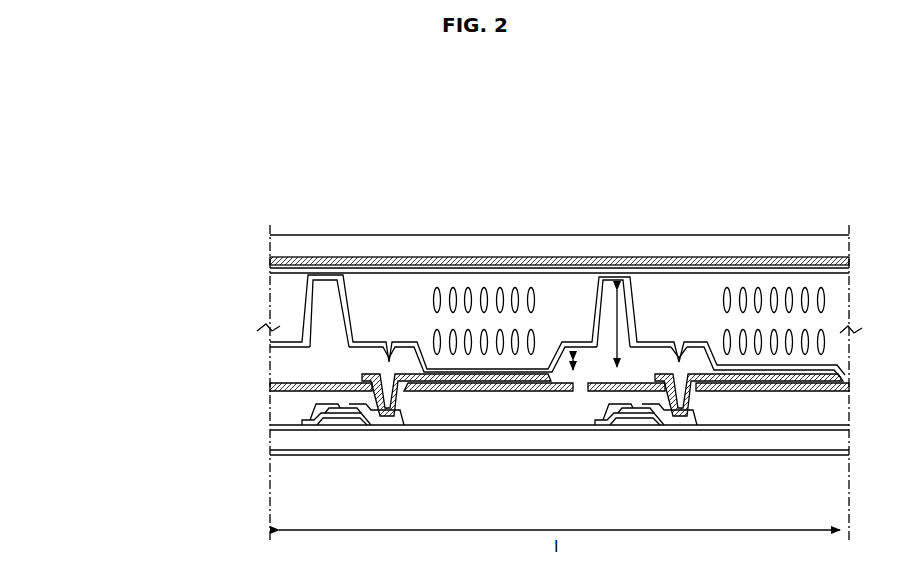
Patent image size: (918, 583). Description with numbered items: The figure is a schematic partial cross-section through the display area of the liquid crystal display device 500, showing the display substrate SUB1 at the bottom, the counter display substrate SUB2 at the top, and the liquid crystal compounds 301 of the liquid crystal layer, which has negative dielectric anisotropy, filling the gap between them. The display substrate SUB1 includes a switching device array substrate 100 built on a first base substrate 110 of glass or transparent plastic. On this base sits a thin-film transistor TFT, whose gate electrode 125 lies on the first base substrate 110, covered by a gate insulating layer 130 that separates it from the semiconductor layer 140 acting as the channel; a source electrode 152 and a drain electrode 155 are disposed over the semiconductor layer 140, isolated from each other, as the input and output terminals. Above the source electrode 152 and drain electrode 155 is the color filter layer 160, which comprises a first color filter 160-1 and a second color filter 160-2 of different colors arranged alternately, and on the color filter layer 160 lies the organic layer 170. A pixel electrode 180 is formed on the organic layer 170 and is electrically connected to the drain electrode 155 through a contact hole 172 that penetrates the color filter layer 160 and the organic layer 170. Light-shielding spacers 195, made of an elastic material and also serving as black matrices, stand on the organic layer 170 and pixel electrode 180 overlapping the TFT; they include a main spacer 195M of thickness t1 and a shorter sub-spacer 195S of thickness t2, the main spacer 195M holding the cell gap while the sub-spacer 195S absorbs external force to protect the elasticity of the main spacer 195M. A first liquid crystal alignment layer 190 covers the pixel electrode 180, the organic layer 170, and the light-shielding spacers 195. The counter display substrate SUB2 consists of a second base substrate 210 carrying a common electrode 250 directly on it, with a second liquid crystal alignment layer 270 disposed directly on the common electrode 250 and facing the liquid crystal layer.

The liquid crystal display device 500 is at (631, 109).
The display substrate SUB1 is at (78, 398).
The counter display substrate SUB2 is at (198, 227).
The switching device array substrate 100 is at (116, 323).
The first base substrate 110 is at (292, 452).
The gate electrode 125 is at (340, 421).
The gate insulating layer 130 is at (292, 438).
The semiconductor layer 140 is at (314, 418).
The source electrode 152 is at (330, 410).
The drain electrode 155 is at (320, 404).
The color filter layer 160 is at (174, 488).
The first color filter 160-1 is at (283, 438).
The second color filter 160-2 is at (293, 420).
The organic layer 170 is at (306, 349).
The contact hole 172 is at (390, 384).
The pixel electrode 180 is at (300, 343).
The first liquid crystal alignment layer 190 is at (320, 280).
The light-shielding spacer 195 is at (335, 315).
The main spacer 195M is at (628, 308).
The sub-spacer 195S is at (660, 358).
The second base substrate 210 is at (278, 247).
The common electrode 250 is at (278, 262).
The second liquid crystal alignment layer 270 is at (278, 271).
The liquid crystal compound 301 is at (507, 300).
The thin-film transistor TFT is at (176, 350).
The thickness of the main spacers t1 is at (620, 318).
The thickness of the sub-spacers t2 is at (571, 364).